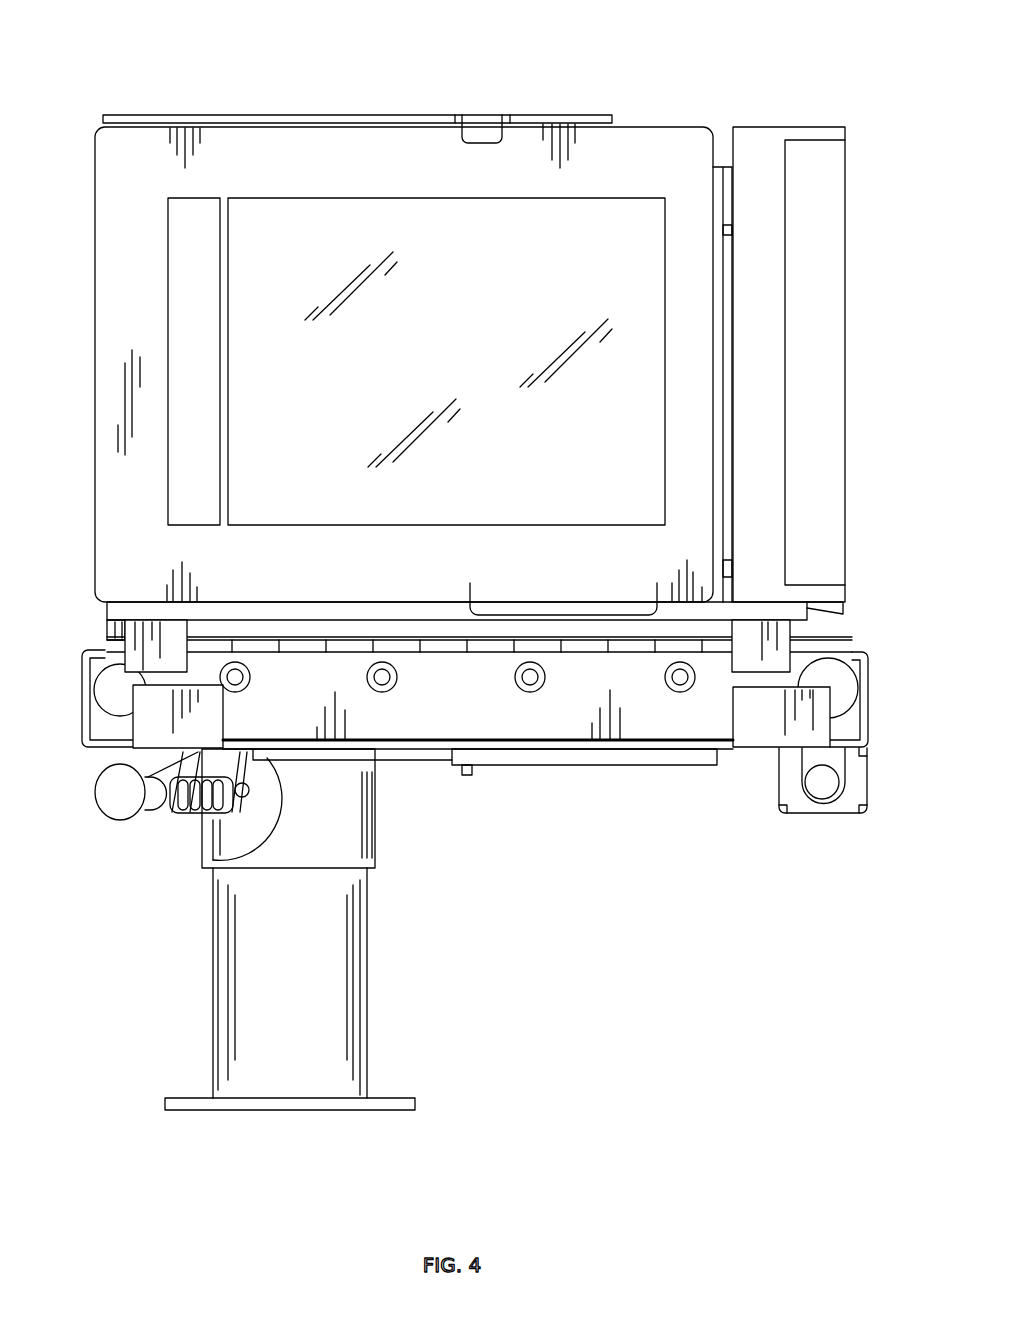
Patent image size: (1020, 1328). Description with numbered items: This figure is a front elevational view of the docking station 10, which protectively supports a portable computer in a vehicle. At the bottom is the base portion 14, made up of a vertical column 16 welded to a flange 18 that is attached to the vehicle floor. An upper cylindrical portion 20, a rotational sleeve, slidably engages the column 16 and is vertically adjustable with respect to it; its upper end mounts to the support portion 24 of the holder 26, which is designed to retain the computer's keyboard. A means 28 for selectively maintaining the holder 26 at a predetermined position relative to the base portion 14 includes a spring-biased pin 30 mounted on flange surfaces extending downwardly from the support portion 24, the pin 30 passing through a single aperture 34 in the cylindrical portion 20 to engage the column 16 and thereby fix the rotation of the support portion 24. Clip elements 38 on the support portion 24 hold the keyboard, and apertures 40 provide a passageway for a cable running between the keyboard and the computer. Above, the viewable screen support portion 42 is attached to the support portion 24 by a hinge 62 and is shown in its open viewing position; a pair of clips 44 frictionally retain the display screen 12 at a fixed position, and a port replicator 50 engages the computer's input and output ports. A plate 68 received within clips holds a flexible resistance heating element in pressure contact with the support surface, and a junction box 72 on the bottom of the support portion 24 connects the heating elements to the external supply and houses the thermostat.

The docking station 10 is at (232, 67).
The display screen 12 is at (95, 223).
The base portion 14 is at (195, 970).
The vertical column 16 is at (270, 1035).
The flange 18 is at (388, 1097).
The upper cylindrical portion 20 is at (320, 838).
The support portion 24 is at (403, 758).
The holder 26 is at (86, 575).
The means for selectively maintaining the holder 28 is at (185, 818).
The spring-biased pin 30 is at (153, 802).
The aperture 34 is at (242, 790).
The clip elements 38 is at (152, 693).
The apertures 40 is at (122, 703).
The viewable screen support portion 42 is at (553, 116).
The clips 44 is at (487, 127).
The port replicator 50 is at (818, 165).
The hinge 62 is at (302, 643).
The plate 68 is at (567, 767).
The junction box 72 is at (815, 813).